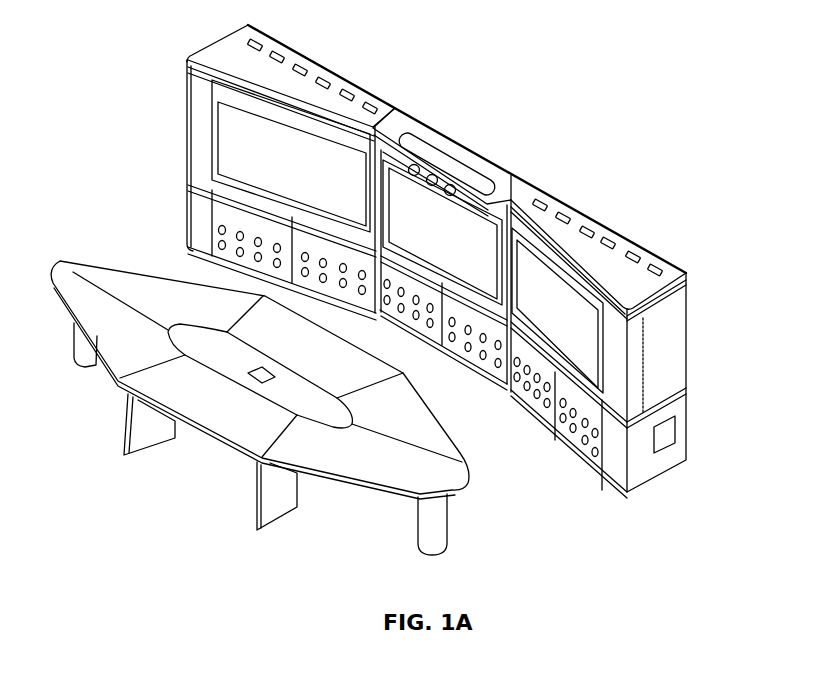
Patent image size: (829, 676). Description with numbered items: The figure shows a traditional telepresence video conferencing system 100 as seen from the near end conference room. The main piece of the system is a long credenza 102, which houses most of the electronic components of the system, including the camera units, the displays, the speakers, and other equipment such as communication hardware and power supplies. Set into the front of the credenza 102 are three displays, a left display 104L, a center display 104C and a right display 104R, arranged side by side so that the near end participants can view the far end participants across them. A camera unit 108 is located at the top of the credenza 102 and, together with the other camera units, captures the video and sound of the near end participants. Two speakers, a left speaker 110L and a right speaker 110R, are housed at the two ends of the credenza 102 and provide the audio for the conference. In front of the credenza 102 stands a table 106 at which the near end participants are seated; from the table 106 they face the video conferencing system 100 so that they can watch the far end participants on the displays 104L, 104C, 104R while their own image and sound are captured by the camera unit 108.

The video conferencing system 100 is at (426, 261).
The credenza 102 is at (212, 48).
The left display 104L is at (291, 156).
The center display 104C is at (442, 232).
The right display 104R is at (557, 310).
The table 106 is at (97, 258).
The camera unit 108 is at (466, 192).
The left speaker 110L is at (187, 80).
The right speaker 110R is at (628, 316).